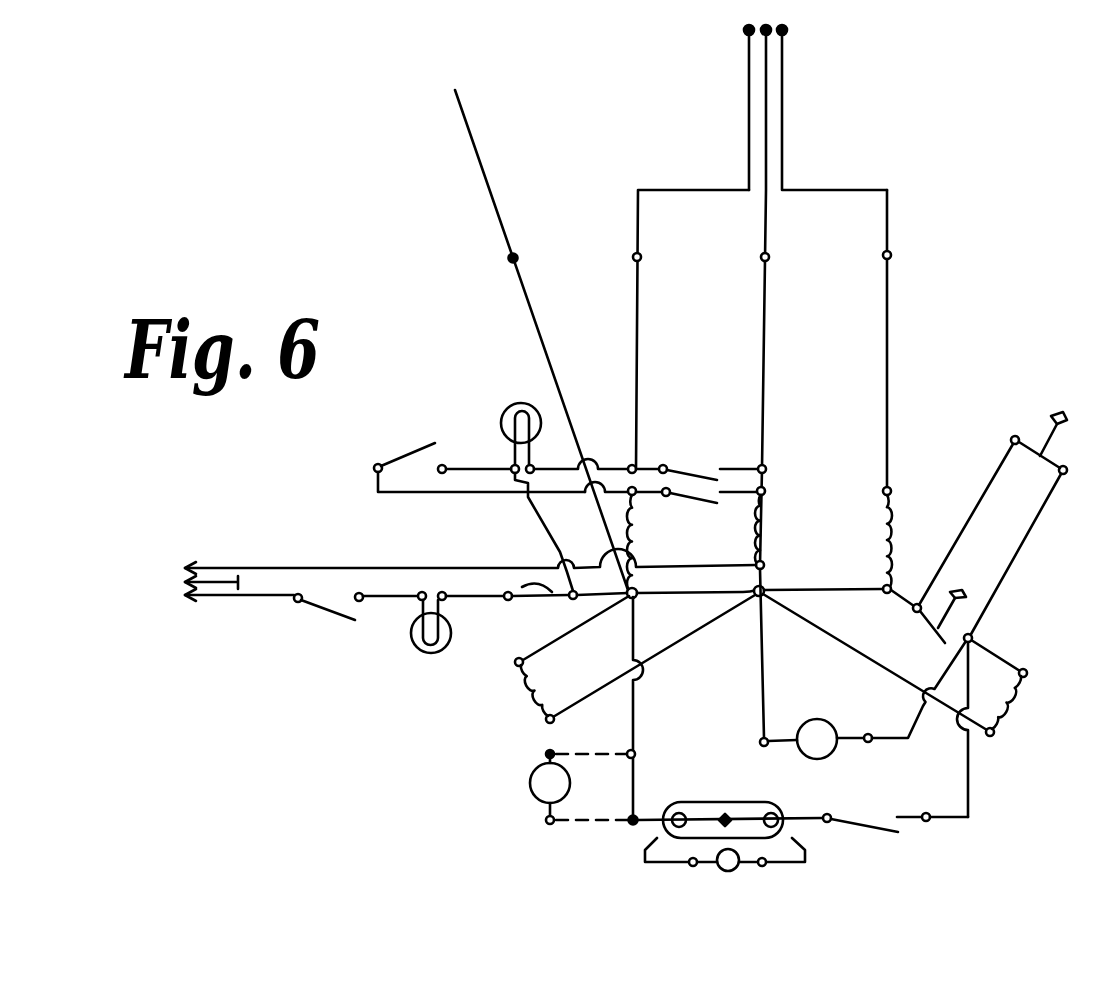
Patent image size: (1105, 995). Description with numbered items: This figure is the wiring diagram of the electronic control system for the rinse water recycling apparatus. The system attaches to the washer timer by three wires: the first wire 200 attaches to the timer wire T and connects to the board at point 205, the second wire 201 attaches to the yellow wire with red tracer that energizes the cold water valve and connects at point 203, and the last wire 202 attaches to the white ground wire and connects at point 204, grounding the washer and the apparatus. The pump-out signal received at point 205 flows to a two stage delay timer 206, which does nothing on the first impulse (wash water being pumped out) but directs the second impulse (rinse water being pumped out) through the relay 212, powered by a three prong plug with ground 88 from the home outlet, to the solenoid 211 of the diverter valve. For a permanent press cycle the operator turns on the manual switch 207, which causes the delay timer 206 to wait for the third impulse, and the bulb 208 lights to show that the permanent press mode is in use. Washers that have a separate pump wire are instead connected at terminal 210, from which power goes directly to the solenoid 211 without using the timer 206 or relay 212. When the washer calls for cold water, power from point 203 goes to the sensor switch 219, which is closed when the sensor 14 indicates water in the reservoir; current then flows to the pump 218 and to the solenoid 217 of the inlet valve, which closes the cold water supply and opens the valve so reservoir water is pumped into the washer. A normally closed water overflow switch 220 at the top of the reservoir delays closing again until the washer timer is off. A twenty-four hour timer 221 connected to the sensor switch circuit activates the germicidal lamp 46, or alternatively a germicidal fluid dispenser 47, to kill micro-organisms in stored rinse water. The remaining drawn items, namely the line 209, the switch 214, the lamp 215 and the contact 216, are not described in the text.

The sensor 14 is at (221, 584).
The germicidal lamp 46 is at (725, 802).
The germicidal fluid dispenser 47 is at (530, 785).
The 3 prong plug with ground 88 is at (223, 601).
The first wire 200 is at (748, 122).
The second wire 201 is at (782, 150).
The last wire 202 is at (766, 105).
The connection point 203 is at (891, 253).
The connection point 204 is at (769, 255).
The connection point 205 is at (641, 255).
The two stage delay timer 206 is at (682, 463).
The switch 207 is at (400, 452).
The bulb 208 is at (521, 403).
The control line 209 is at (485, 171).
The terminal 210 is at (508, 258).
The solenoid 211 is at (527, 695).
The relay 212 is at (640, 530).
The switch 214 is at (325, 612).
The lamp 215 is at (418, 652).
The contact 216 is at (528, 600).
The solenoid 217 is at (1012, 705).
The pump 218 is at (825, 757).
The switch 219 is at (930, 630).
The water overflow switch 220 is at (1054, 412).
The 24 hour timer 221 is at (858, 830).